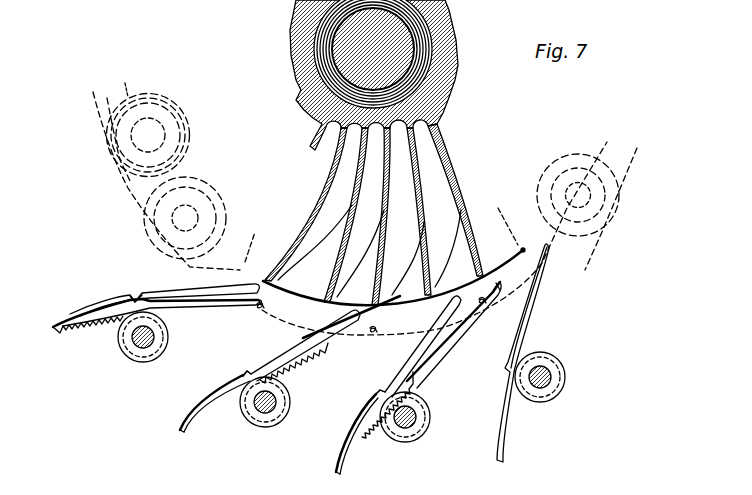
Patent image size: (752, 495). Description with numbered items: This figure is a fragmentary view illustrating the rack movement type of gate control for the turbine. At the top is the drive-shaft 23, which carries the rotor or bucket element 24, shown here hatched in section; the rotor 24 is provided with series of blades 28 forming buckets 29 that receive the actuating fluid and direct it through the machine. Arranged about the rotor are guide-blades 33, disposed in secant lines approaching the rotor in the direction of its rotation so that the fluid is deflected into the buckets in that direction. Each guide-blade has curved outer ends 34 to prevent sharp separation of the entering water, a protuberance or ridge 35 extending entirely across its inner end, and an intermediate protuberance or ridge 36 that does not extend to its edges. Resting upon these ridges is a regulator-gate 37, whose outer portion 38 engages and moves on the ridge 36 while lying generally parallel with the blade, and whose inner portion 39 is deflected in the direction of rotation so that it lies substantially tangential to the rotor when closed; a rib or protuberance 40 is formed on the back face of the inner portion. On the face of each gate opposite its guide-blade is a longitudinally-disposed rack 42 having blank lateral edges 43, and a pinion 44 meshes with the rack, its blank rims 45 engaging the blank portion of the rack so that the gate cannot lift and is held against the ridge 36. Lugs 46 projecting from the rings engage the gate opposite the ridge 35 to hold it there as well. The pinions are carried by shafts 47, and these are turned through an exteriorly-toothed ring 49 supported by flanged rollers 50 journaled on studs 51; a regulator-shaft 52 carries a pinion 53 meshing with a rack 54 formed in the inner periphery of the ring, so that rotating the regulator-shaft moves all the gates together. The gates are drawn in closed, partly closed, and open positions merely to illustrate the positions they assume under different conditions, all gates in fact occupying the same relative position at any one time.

The drive-shaft 23 is at (347, 42).
The rotor or bucket element 24 is at (320, 100).
The blades 28 is at (318, 206).
The buckets 29 is at (369, 251).
The guide-blades 33 is at (112, 292).
The curved outer ends 34 is at (73, 310).
The protuberance or ridge 35 is at (262, 281).
The protuberance or ridge 36 is at (137, 298).
The regulator-gate 37 is at (200, 302).
The outer portion 38 is at (87, 318).
The inner portion 39 is at (251, 303).
The rib or protuberance 40 is at (182, 297).
The rack 42 is at (102, 328).
The blank longitudinal portions or lateral edges 43 is at (67, 330).
The pinion 44 is at (133, 357).
The blank rims 45 is at (158, 359).
The lugs 46 is at (480, 301).
The shafts 47 is at (153, 340).
The exteriorly-toothed ring 49 is at (547, 273).
The flanged rollers 50 is at (228, 212).
The studs 51 is at (188, 220).
The regulator-shaft 52 is at (163, 134).
The pinion 53 is at (185, 146).
The rack 54 is at (120, 185).